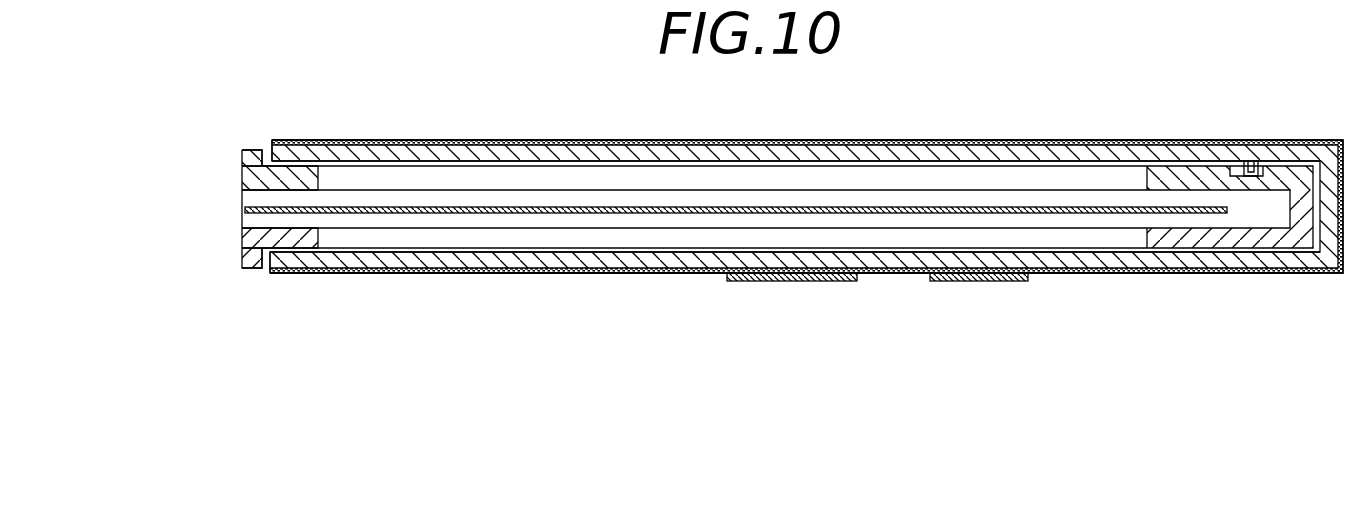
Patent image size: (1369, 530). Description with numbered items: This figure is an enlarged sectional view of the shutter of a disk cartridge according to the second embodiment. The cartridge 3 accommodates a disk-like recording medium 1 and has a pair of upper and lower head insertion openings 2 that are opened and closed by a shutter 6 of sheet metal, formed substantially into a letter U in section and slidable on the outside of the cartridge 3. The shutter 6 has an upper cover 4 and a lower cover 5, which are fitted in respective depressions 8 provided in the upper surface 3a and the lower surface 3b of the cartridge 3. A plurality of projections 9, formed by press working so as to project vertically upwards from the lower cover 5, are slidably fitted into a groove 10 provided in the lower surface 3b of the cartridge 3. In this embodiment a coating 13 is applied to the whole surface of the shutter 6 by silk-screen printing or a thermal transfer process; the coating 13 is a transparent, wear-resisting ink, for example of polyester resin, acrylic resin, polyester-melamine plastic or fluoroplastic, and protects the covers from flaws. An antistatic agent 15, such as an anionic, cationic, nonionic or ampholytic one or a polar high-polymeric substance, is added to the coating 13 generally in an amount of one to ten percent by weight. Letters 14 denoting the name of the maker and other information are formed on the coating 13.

The disk-like recording medium 1 is at (483, 214).
The head insertion openings 2 is at (398, 172).
The cartridge 3 is at (237, 164).
The upper surface 3a is at (253, 269).
The lower surface 3b is at (256, 149).
The upper cover 4 is at (560, 274).
The lower cover 5 is at (563, 140).
The shutter 6 is at (963, 136).
The depressions 8 is at (302, 166).
The projections 9 is at (1256, 160).
The groove 10 is at (1246, 160).
The coating 13 is at (797, 140).
The letters 14 is at (857, 282).
The antistatic agent 15 is at (730, 140).